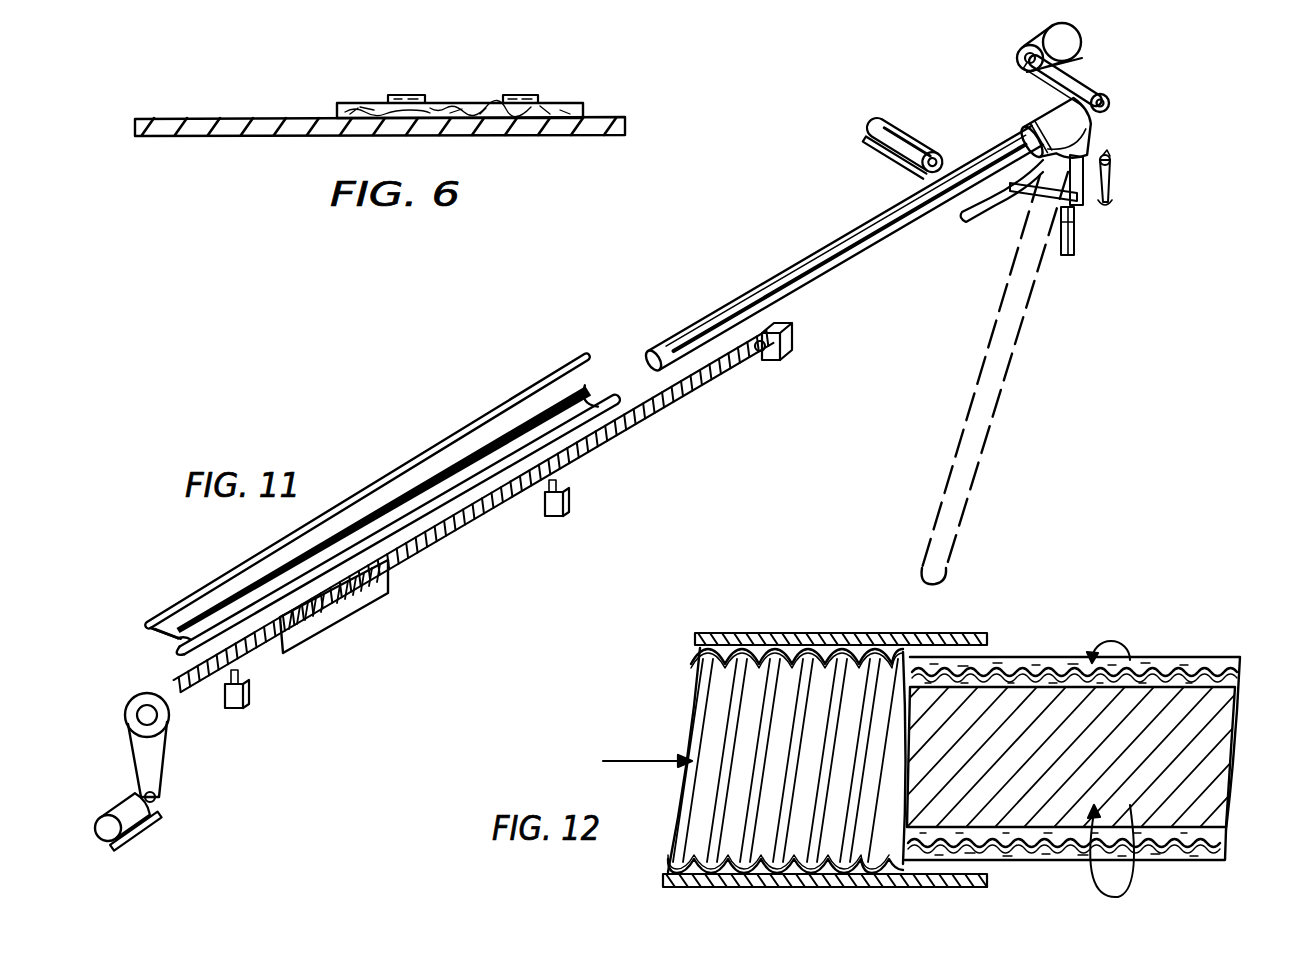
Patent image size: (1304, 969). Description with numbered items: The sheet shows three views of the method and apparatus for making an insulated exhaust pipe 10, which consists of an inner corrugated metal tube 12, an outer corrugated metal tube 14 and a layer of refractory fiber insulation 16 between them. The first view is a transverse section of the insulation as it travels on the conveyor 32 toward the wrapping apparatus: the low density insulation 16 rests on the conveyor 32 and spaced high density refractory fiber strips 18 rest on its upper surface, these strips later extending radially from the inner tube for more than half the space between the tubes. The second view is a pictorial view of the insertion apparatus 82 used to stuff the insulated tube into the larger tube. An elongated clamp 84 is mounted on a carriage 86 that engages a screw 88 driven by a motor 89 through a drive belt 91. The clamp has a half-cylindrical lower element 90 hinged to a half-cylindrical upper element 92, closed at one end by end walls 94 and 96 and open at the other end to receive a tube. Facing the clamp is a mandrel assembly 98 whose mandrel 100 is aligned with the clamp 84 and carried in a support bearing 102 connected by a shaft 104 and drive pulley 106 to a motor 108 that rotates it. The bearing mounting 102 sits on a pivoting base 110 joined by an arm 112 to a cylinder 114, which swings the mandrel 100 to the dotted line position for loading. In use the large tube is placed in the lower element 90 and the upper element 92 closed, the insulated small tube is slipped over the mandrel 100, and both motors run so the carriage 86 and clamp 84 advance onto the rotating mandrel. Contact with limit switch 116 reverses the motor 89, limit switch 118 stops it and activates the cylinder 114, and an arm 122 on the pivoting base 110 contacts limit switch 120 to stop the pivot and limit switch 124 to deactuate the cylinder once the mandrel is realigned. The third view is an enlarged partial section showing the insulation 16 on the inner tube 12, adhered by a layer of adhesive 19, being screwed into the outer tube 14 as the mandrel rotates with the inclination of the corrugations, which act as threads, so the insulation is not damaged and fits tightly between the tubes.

In FIG. 12, the exhaust pipe 10 is at (1217, 726).
In FIG. 12, the inner corrugated metal tube 12 is at (1208, 816).
In FIG. 12, the outer corrugated metal tube 14 is at (717, 712).
In FIG. 6, the refractory fiber insulation 16 is at (570, 103).
In FIG. 12, the refractory fiber insulation 16 is at (1190, 668).
In FIG. 6, the refractory fiber strips 18 is at (510, 97).
In FIG. 12, the adhesive 19 is at (1018, 665).
In FIG. 6, the conveyor 32 is at (226, 118).
In FIG. 11, the apparatus 82 is at (590, 318).
In FIG. 11, the elongated clamp 84 is at (148, 593).
In FIG. 11, the carriage 86 is at (330, 615).
In FIG. 11, the screw 88 is at (480, 520).
In FIG. 11, the motor 89 is at (123, 806).
In FIG. 11, the lower element 90 is at (400, 518).
In FIG. 12, the lower element 90 is at (811, 887).
In FIG. 11, the drive belt 91 is at (163, 779).
In FIG. 11, the upper element 92 is at (436, 470).
In FIG. 12, the upper element 92 is at (791, 633).
In FIG. 11, the end wall 94 is at (140, 639).
In FIG. 11, the end wall 96 is at (152, 675).
In FIG. 11, the mandrel assembly 98 is at (810, 158).
In FIG. 11, the mandrel 100 is at (852, 224).
In FIG. 11, the support bearing 102 is at (1058, 115).
In FIG. 11, the shaft 104 is at (1108, 108).
In FIG. 11, the drive pulley 106 is at (1092, 78).
In FIG. 11, the motor 108 is at (1060, 47).
In FIG. 11, the pivoting base 110 is at (1070, 186).
In FIG. 11, the arm 112 is at (1008, 188).
In FIG. 11, the cylinder 114 is at (912, 142).
In FIG. 11, the limit switch 116 is at (566, 497).
In FIG. 11, the limit switch 118 is at (246, 702).
In FIG. 11, the limit switch 120 is at (1112, 170).
In FIG. 11, the arm 122 is at (1113, 157).
In FIG. 11, the limit switch 124 is at (1077, 232).